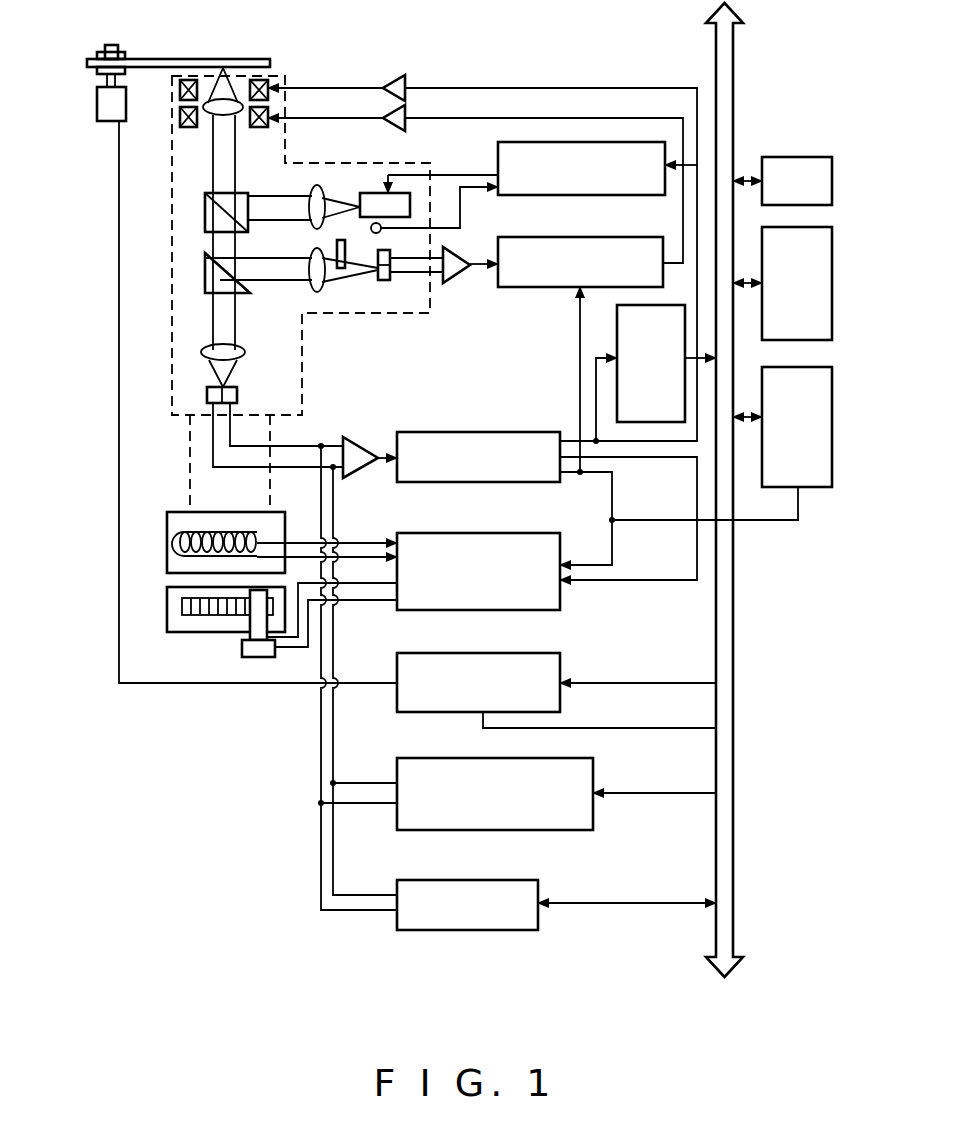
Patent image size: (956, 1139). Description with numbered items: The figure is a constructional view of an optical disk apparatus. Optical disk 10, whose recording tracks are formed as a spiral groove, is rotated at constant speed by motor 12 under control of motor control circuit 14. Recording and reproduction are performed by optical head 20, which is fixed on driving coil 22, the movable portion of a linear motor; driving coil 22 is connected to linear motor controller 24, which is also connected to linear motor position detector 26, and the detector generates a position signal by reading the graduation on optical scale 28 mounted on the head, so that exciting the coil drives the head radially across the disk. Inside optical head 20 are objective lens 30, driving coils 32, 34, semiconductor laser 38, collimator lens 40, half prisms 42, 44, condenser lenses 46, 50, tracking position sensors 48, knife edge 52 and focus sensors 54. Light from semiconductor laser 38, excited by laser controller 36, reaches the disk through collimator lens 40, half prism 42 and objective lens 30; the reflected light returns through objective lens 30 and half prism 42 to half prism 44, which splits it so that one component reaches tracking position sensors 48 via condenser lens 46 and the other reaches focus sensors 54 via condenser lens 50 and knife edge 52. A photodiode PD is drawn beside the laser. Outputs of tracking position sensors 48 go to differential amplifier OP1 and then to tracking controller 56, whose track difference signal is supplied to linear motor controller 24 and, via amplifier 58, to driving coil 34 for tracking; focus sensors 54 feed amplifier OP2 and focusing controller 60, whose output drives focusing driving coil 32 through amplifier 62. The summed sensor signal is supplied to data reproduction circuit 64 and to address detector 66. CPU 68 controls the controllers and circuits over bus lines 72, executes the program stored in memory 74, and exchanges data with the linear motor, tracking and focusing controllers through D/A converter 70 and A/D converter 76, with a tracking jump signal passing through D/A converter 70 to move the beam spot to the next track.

The optical disk 10 is at (194, 58).
The motor 12 is at (126, 108).
The motor control circuit 14 is at (478, 653).
The optical head 20 is at (300, 163).
The driving coil 22 is at (190, 540).
The linear motor controller 24 is at (478, 533).
The linear motor position detector 26 is at (270, 658).
The optical scale 28 is at (182, 633).
The objective lens 30 is at (223, 114).
The driving coil 32 is at (258, 128).
The driving coil 34 is at (268, 82).
The laser controller 36 is at (498, 156).
The semiconductor laser 38 is at (366, 193).
The collimator lens 40 is at (314, 192).
The half prism 42 is at (206, 204).
The half prism 44 is at (246, 293).
The condenser lens 46 is at (245, 352).
The tracking position sensors 48 is at (238, 396).
The condenser lens 50 is at (322, 288).
The knife edge 52 is at (347, 243).
The focus sensors 54 is at (386, 281).
The tracking controller 56 is at (478, 432).
The amplifier 58 is at (395, 75).
The focusing controller 60 is at (545, 288).
The amplifier 62 is at (401, 126).
The data reproduction circuit 64 is at (593, 822).
The address detector 66 is at (475, 880).
The CPU 68 is at (797, 157).
The D/A converter 70 is at (802, 488).
The bus lines 72 is at (735, 783).
The memory 74 is at (772, 340).
The A/D converter 76 is at (670, 305).
The photodiode PD is at (371, 229).
The differential amplifier OP1 is at (353, 437).
The amplifier OP2 is at (455, 284).